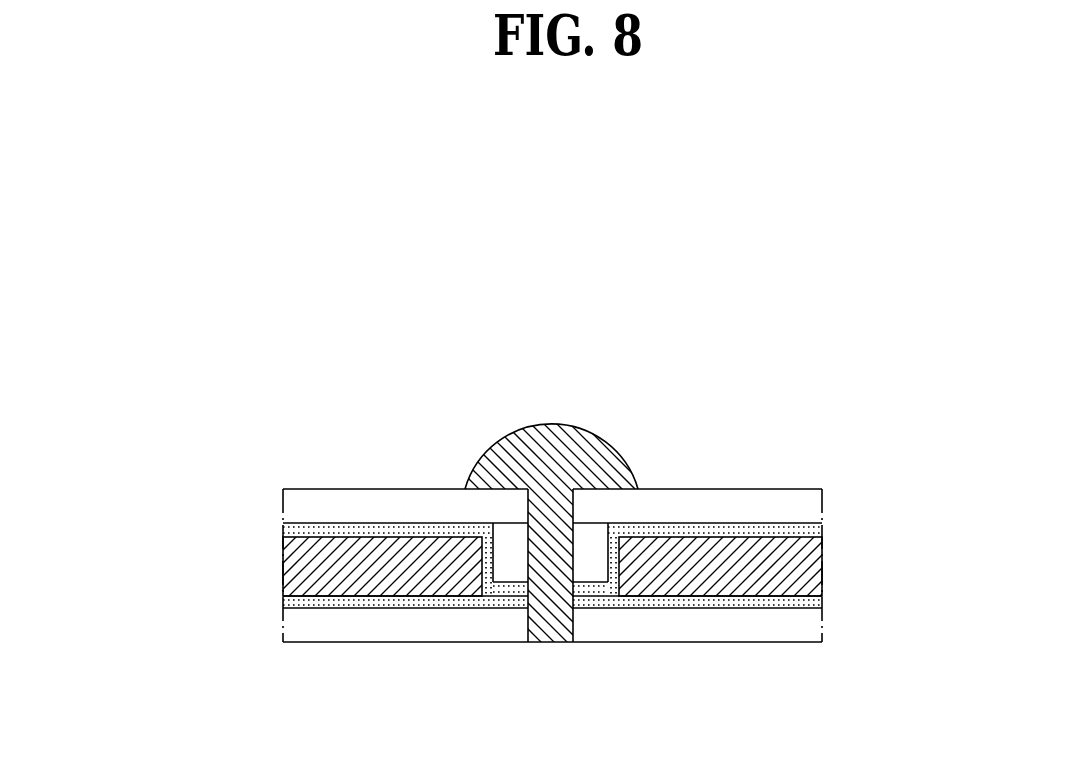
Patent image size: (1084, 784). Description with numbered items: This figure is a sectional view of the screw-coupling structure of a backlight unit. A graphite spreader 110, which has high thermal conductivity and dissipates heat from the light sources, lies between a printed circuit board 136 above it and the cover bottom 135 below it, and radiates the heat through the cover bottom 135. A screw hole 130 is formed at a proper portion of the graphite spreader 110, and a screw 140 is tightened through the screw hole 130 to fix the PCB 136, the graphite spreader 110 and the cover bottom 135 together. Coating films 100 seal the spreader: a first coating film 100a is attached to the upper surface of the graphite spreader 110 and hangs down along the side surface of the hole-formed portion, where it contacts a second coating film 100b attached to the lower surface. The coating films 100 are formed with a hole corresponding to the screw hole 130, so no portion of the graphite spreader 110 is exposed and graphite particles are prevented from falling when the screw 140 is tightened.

The coating films 100 is at (442, 569).
The first coating film 100a is at (283, 526).
The second coating film 100b is at (283, 601).
The graphite spreader 110 is at (813, 570).
The screw hole 130 is at (590, 575).
The cover bottom 135 is at (813, 628).
The printed circuit board 136 is at (813, 505).
The screw 140 is at (552, 437).